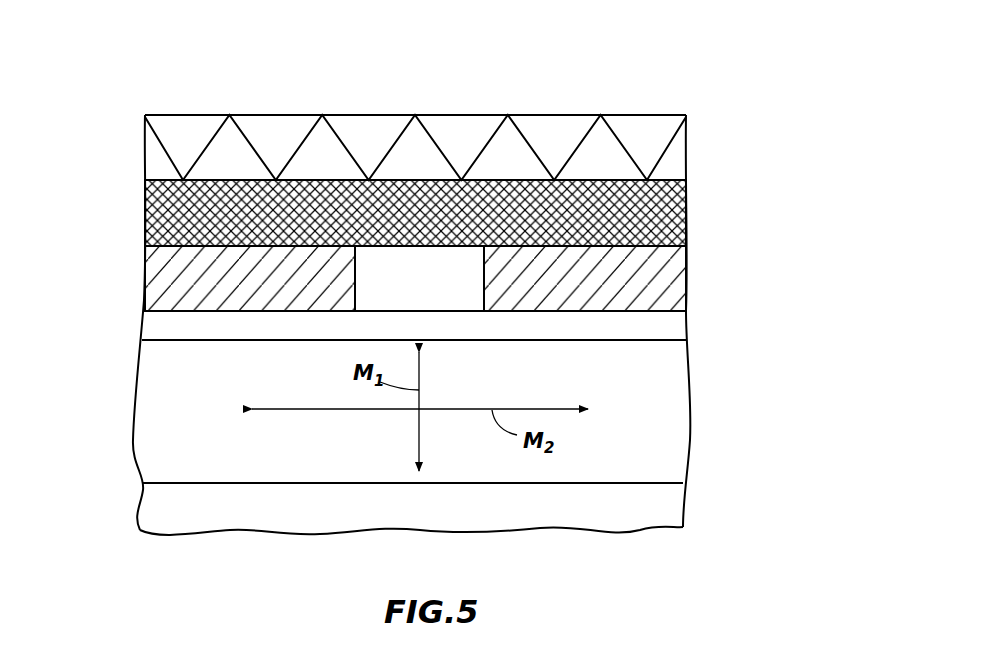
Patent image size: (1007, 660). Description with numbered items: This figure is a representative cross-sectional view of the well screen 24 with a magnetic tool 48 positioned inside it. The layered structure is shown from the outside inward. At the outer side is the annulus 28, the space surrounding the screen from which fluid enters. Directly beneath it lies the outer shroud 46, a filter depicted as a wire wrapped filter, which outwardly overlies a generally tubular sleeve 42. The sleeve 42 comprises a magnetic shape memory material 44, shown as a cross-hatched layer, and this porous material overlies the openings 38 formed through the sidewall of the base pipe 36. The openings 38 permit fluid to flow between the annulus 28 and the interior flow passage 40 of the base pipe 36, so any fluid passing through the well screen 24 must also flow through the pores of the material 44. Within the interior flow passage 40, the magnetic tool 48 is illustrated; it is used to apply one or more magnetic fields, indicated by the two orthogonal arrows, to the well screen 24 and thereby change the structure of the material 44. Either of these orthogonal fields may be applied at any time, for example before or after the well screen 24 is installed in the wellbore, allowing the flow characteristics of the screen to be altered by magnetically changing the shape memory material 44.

The well screen 24 is at (765, 77).
The annulus 28 is at (413, 60).
The outer shroud 46 is at (490, 116).
The magnetic shape memory material 44 is at (148, 213).
The tubular sleeve 42 is at (165, 249).
The base pipe 36 is at (686, 270).
The openings 38 is at (483, 292).
The interior flow passage 40 is at (673, 313).
The magnetic tool 48 is at (668, 485).